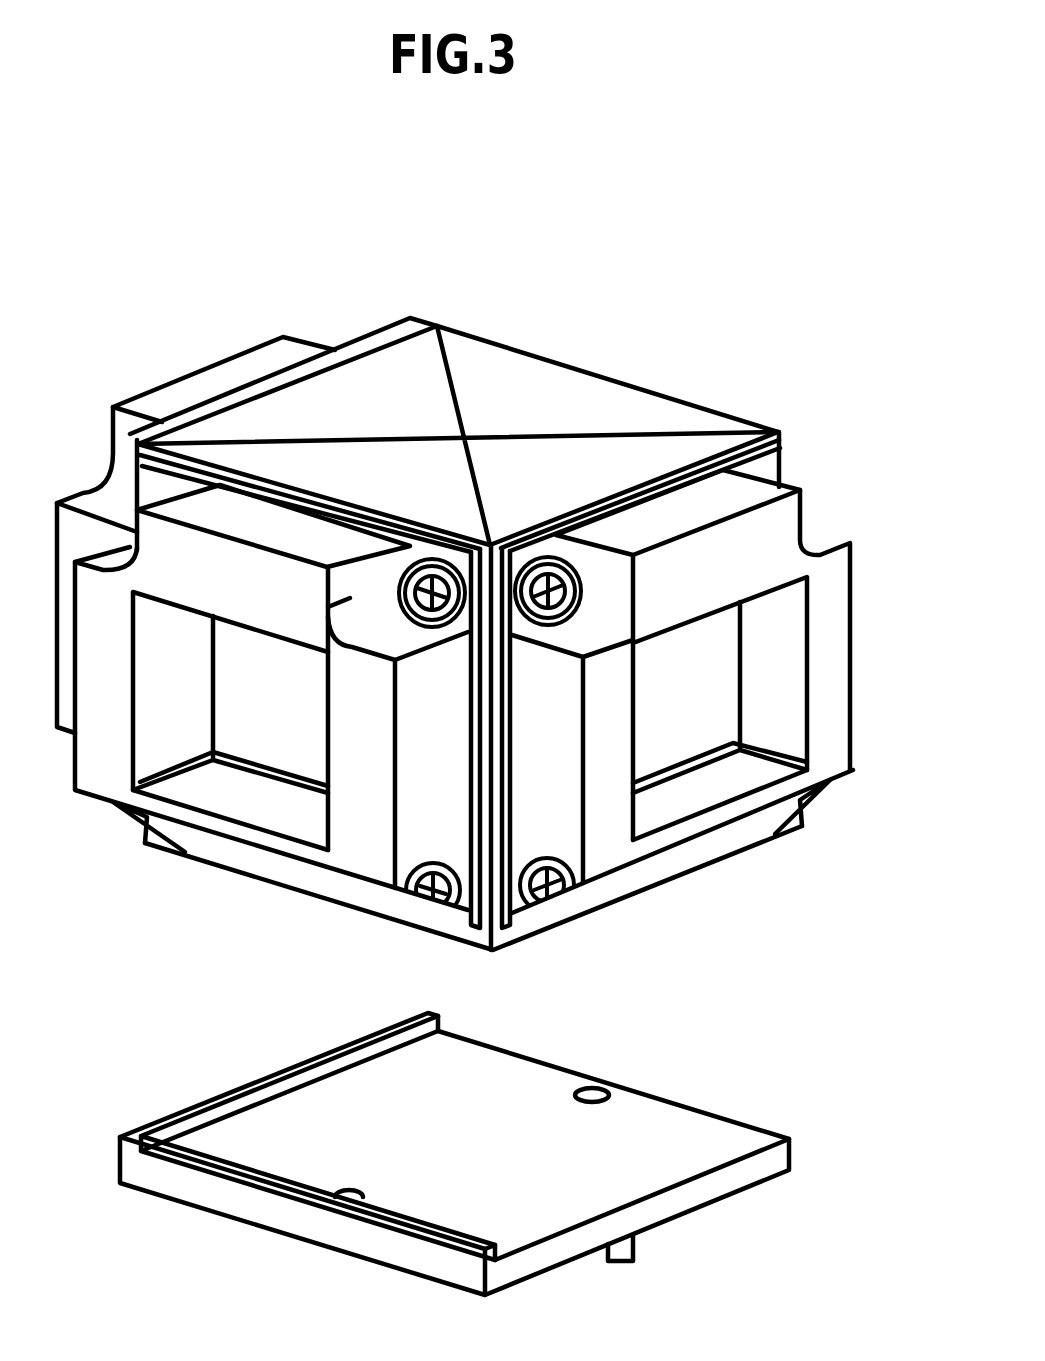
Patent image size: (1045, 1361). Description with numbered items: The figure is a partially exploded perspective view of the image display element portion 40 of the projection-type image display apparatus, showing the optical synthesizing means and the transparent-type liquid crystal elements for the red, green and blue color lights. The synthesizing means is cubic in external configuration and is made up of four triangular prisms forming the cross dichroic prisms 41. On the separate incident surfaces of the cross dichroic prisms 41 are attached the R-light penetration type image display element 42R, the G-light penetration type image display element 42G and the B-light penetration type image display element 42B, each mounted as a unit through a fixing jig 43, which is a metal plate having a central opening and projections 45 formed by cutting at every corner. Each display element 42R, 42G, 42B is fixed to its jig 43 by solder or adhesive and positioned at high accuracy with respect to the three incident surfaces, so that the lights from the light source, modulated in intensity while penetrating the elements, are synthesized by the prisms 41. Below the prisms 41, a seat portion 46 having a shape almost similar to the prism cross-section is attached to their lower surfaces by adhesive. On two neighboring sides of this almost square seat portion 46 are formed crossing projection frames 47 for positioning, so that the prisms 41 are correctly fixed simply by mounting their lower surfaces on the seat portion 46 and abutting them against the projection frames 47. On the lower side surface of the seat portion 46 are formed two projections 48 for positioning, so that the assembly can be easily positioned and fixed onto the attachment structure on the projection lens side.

The image display element portion 40 is at (488, 327).
The cross dichroic prisms 41 is at (557, 382).
The R-light penetration type image display element 42R is at (167, 398).
The G-light penetration type image display element 42G is at (772, 647).
The B-light penetration type image display element 42B is at (265, 742).
The fixing jig 43 is at (467, 917).
The projections 45 is at (570, 607).
The seat portion 46 is at (447, 1159).
The projection frames for positioning 47 is at (280, 1088).
The projections for positioning 48 is at (625, 1248).